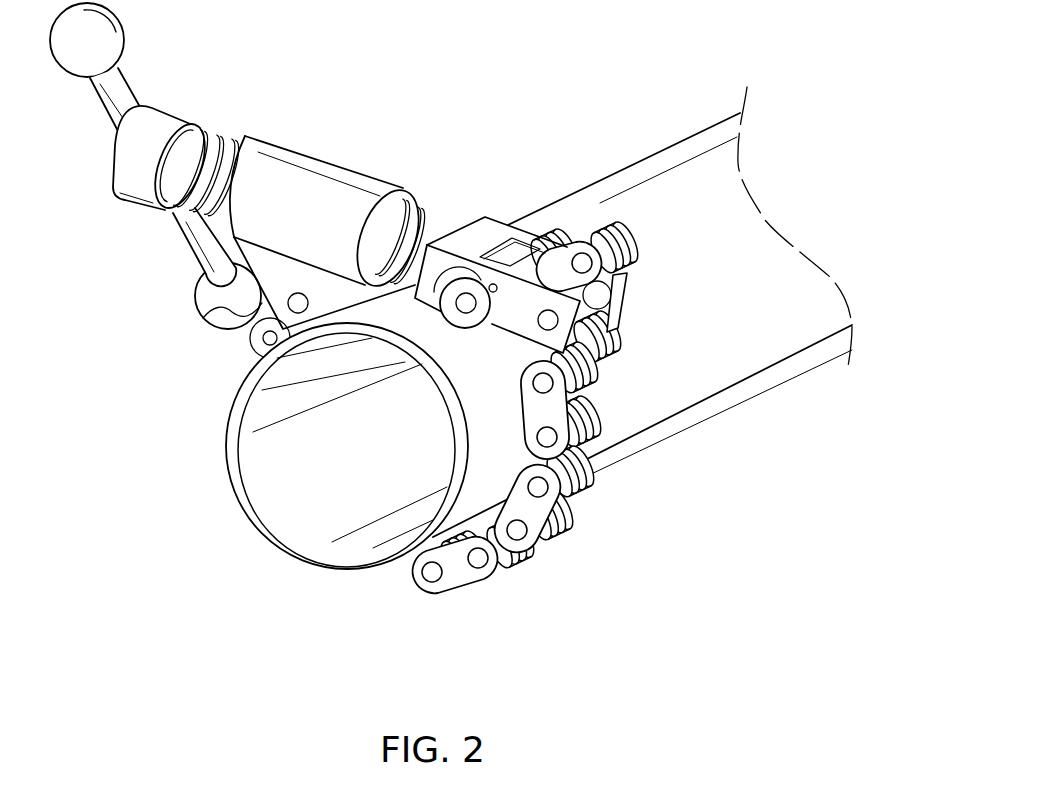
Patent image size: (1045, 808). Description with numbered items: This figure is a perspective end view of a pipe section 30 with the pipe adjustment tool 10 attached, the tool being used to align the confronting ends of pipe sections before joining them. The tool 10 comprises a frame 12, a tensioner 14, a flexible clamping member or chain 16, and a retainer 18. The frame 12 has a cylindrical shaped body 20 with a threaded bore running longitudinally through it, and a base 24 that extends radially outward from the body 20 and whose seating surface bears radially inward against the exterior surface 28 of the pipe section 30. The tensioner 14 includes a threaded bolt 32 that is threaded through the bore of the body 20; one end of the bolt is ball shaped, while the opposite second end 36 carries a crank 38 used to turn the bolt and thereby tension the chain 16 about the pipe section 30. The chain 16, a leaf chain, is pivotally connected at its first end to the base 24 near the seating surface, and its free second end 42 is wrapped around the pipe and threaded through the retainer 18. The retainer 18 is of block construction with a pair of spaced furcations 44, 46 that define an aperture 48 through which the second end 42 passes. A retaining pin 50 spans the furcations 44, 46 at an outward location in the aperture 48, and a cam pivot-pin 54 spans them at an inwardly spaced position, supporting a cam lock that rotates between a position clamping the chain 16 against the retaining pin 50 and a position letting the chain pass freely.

The pipe adjustment tool 10 is at (496, 118).
The frame 12 is at (376, 185).
The tensioner 14 is at (220, 135).
The clamping member or chain 16 is at (567, 367).
The retainer 18 is at (507, 223).
The cylindrical shaped body 20 is at (306, 165).
The base 24 is at (205, 320).
The exterior surface 28 is at (705, 370).
The pipe section 30 is at (699, 132).
The threaded bolt 32 is at (187, 215).
The second end 36 is at (117, 185).
The crank 38 is at (100, 100).
The second end 42 is at (633, 244).
The furcation 44 is at (523, 327).
The furcation 46 is at (620, 307).
The aperture 48 is at (568, 232).
The retaining pin 50 is at (607, 330).
The cam pivot-pin 54 is at (470, 225).